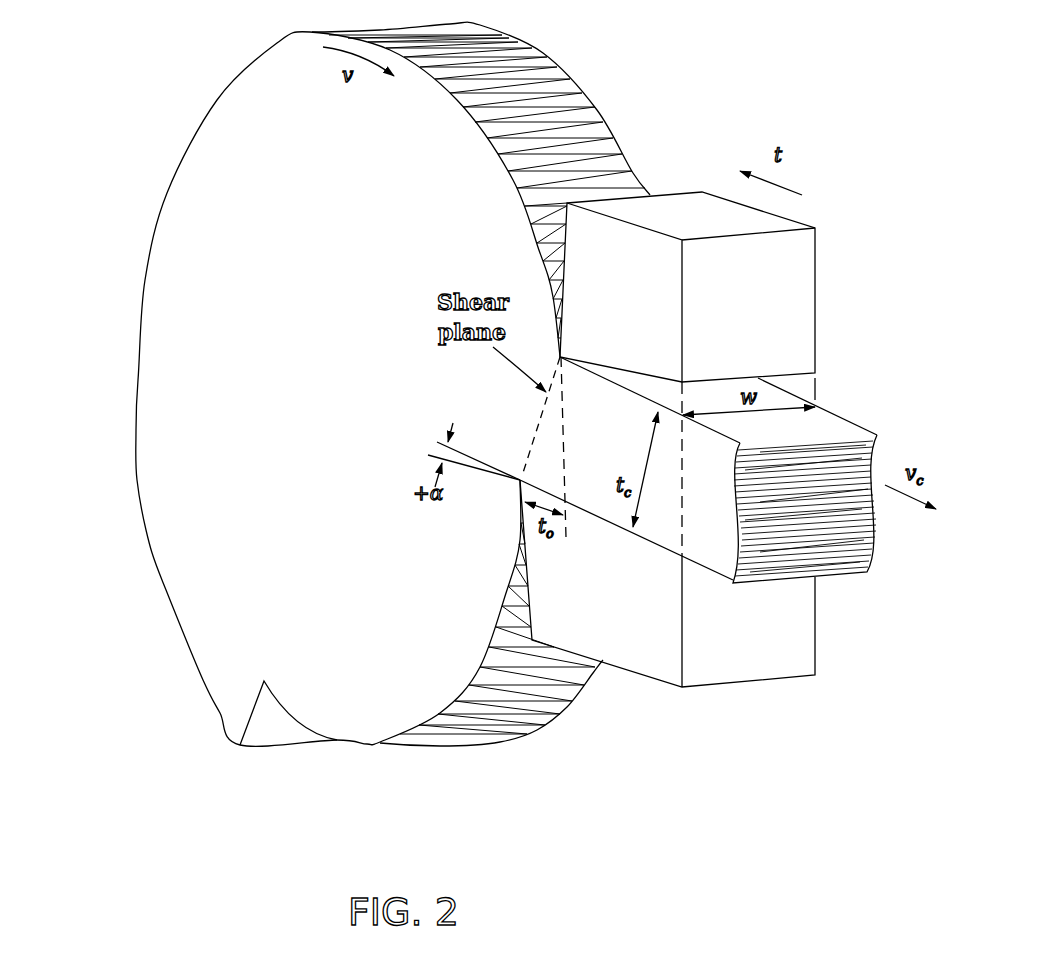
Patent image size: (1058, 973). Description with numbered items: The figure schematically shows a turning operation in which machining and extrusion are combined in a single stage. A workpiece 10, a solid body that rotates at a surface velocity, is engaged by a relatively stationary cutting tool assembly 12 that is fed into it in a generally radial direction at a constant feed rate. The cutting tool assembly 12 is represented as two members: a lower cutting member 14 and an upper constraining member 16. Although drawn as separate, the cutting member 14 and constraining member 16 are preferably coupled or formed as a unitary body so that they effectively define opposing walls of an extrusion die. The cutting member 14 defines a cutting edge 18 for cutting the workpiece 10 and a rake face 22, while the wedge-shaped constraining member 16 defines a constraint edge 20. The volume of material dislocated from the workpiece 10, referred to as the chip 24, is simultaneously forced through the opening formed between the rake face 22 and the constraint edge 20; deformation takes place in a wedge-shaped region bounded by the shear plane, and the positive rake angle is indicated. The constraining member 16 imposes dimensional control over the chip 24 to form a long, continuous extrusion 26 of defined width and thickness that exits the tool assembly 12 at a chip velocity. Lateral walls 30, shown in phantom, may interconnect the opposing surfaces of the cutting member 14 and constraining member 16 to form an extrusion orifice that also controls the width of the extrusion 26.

The workpiece 10 is at (116, 224).
The cutting tool assembly 12 is at (842, 236).
The cutting member 14 is at (700, 635).
The constraining member 16 is at (773, 310).
The cutting edge 18 is at (520, 480).
The constraint edge 20 is at (560, 357).
The rake face 22 is at (593, 517).
The chip 24 is at (548, 458).
The extrusion 26 is at (815, 535).
The lateral walls 30 is at (815, 388).